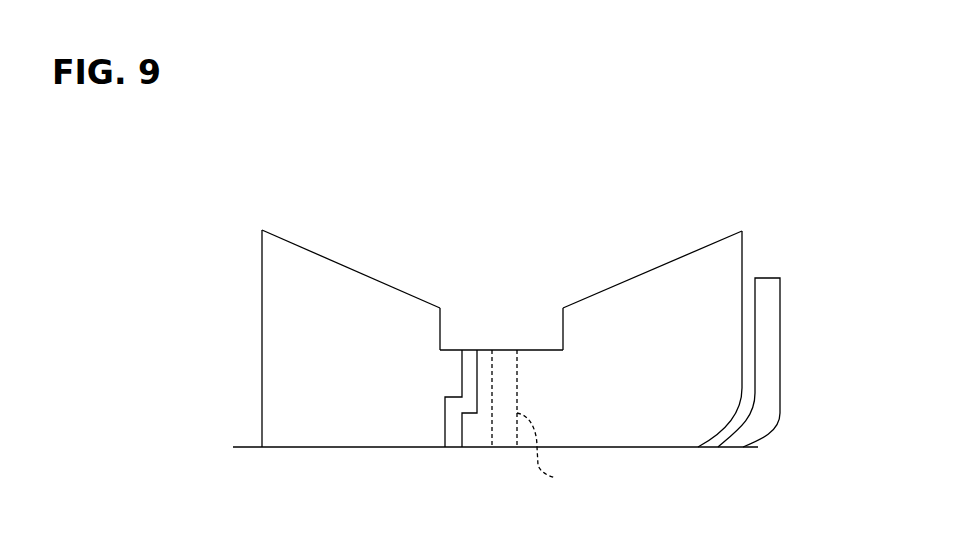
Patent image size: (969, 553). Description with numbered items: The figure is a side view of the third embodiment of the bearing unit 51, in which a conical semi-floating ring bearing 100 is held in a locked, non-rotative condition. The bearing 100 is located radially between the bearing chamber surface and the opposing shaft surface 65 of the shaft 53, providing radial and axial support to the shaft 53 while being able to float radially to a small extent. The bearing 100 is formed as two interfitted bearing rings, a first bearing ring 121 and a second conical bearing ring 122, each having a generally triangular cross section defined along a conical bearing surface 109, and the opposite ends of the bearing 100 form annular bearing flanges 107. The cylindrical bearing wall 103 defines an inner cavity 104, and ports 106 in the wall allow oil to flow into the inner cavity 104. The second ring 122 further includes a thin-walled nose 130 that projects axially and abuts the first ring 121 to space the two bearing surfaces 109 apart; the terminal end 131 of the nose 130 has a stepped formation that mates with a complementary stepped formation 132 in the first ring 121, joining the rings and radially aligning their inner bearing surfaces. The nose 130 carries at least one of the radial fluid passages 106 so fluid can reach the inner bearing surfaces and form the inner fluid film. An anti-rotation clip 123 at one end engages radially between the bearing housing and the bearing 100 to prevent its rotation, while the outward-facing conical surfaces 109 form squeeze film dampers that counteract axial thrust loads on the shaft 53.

The conical semi-floating ring bearing 100 is at (247, 235).
The bearing unit 51 is at (268, 203).
The shaft 53 is at (748, 450).
The opposing shaft surface 65 is at (248, 447).
The cylindrical bearing wall 103 is at (541, 317).
The inner cavity 104 is at (541, 249).
The ports 106 is at (551, 450).
The annular bearing flanges 107 is at (283, 355).
The conical bearing surface 109 is at (310, 250).
The first bearing ring 121 is at (362, 407).
The second conical bearing ring 122 is at (615, 400).
The anti-rotation clip 123 is at (787, 355).
The thin-walled nose 130 is at (498, 350).
The terminal end 131 is at (467, 350).
The complementary stepped formation 132 is at (437, 425).